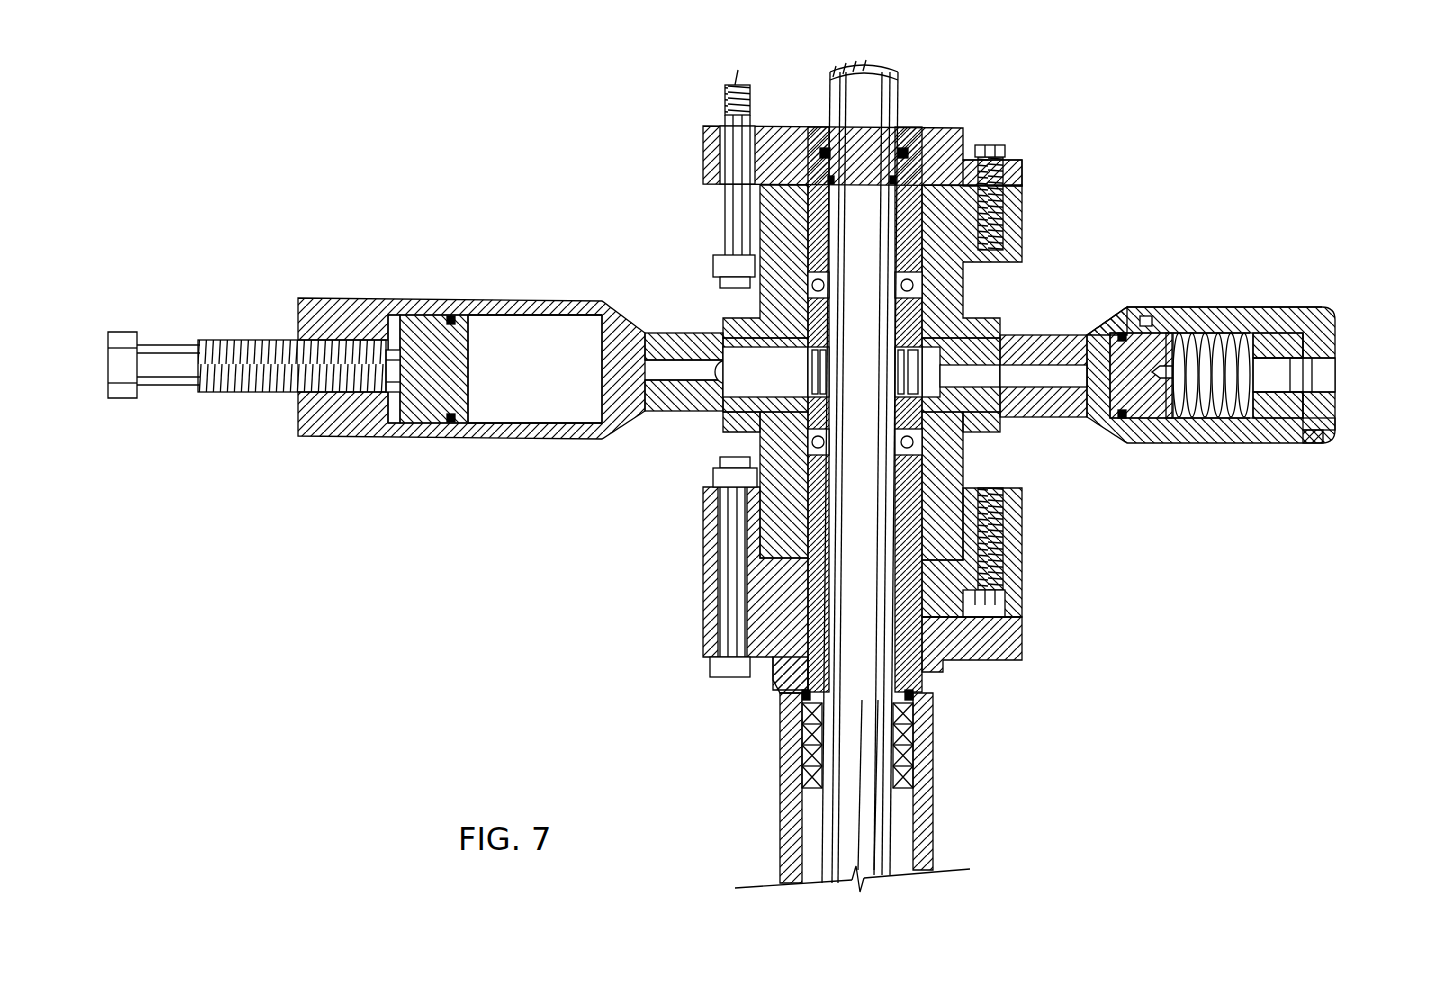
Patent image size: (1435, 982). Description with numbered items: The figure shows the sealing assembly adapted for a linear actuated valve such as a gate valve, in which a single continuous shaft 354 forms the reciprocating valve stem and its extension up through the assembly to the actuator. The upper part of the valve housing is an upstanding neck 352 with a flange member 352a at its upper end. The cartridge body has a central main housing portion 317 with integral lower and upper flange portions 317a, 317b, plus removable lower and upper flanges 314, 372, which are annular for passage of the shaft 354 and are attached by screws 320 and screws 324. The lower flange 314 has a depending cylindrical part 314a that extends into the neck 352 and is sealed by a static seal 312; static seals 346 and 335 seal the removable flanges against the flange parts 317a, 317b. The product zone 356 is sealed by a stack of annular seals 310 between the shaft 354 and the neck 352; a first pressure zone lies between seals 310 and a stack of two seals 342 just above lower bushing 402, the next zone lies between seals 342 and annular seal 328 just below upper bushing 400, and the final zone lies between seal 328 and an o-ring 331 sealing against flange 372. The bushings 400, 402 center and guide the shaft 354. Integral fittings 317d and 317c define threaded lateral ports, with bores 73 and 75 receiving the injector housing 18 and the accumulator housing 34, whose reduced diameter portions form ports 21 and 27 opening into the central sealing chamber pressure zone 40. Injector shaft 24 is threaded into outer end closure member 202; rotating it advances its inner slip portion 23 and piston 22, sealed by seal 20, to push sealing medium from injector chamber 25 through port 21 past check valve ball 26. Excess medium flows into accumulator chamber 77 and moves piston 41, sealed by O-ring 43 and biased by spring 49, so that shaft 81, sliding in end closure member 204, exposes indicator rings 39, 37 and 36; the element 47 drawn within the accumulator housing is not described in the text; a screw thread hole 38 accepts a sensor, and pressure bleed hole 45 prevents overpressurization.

The injector housing 18 is at (530, 439).
The seal 20 is at (440, 436).
The port 21 is at (665, 360).
The piston 22 is at (405, 420).
The inner slip portion 23 is at (430, 360).
The injector shaft 24 is at (290, 358).
The injector chamber 25 is at (538, 340).
The check valve ball 26 is at (718, 360).
The port 27 is at (1035, 378).
The accumulator housing 34 is at (1240, 320).
The ring 36 is at (1332, 372).
The ring 37 is at (1332, 420).
The screw thread hole 38 is at (1318, 444).
The ring 39 is at (1285, 444).
The central sealing chamber pressure zone 40 is at (920, 292).
The piston 41 is at (1125, 350).
The O-ring 43 is at (1135, 444).
The pressure bleed hole 45 is at (1185, 444).
The valve seat member 47 is at (1228, 430).
The spring 49 is at (1195, 335).
The threaded lateral bore 73 is at (737, 422).
The threaded lateral bore 75 is at (990, 422).
The accumulator chamber 77 is at (1092, 340).
The shaft 81 is at (1262, 420).
The outer end closure member 202 is at (350, 330).
The outer end closure member 204 is at (1318, 308).
The annular seals 310 is at (790, 765).
The static o-ring type seal 312 is at (800, 697).
The lower flange 314 is at (710, 576).
The central cylindrical part 314a is at (912, 692).
The central main housing portion 317 is at (945, 482).
The lower flange portion 317a is at (1025, 545).
The upper flange portion 317b is at (1025, 200).
The fitting 317c is at (1030, 305).
The fitting 317d is at (775, 290).
The screws 320 is at (1022, 628).
The screws 324 is at (1020, 128).
The annular seal 328 is at (1015, 210).
The o-ring 331 is at (918, 128).
The static o-ring type seal 335 is at (790, 126).
The seals 342 is at (812, 455).
The static o-ring type seal 346 is at (1003, 580).
The upstanding neck 352 is at (925, 722).
The flange member 352a is at (1000, 640).
The shaft 354 is at (880, 790).
The product zone 356 is at (888, 833).
The upper flange 372 is at (945, 160).
The bushing 400 is at (930, 150).
The bushing 402 is at (810, 522).